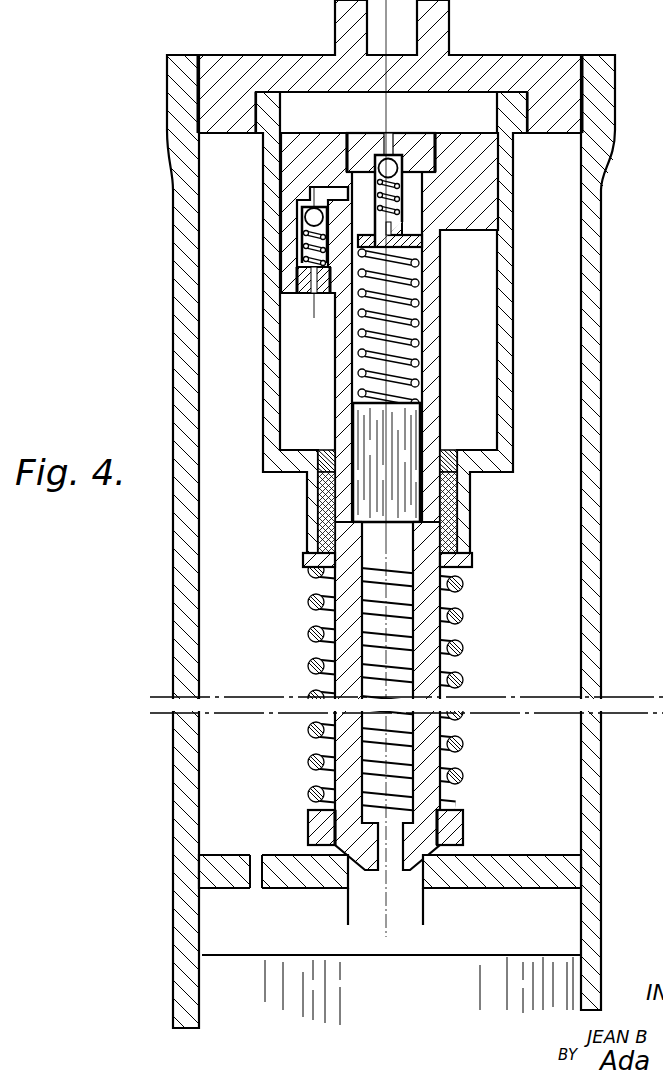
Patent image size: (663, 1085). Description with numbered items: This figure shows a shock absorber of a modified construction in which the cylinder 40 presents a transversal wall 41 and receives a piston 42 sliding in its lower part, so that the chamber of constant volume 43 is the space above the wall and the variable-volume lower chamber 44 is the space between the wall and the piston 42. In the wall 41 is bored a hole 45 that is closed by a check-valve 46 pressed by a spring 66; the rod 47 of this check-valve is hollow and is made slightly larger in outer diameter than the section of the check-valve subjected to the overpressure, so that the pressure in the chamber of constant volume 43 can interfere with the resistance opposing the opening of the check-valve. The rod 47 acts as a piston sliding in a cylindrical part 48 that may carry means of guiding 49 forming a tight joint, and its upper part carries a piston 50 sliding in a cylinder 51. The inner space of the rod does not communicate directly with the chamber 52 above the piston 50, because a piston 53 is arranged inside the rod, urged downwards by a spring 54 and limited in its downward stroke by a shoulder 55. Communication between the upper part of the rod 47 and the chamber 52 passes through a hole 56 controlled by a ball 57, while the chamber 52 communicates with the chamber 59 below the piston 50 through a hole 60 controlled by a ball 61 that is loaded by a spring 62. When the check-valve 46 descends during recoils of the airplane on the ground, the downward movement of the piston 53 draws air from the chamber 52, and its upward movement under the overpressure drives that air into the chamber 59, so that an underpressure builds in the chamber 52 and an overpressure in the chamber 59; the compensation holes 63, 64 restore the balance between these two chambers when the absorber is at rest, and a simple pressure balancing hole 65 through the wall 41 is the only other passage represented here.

The cylinder 40 is at (587, 463).
The transversal wall 41 is at (503, 870).
The piston 42 is at (555, 983).
The chamber of constant volume 43 is at (550, 421).
The lower chamber 44 is at (548, 913).
The hole 45 is at (377, 880).
The check-valve 46 is at (429, 834).
The rod 47 is at (347, 771).
The cylindrical part 48 is at (320, 500).
The means of guiding 49 is at (323, 515).
The piston 50 is at (478, 196).
The cylinder 51 is at (271, 313).
The chamber 52 is at (452, 110).
The piston 53 is at (402, 423).
The spring 54 is at (400, 337).
The shoulder 55 is at (364, 524).
The hole 56 is at (386, 157).
The ball 57 is at (393, 159).
The chamber 59 is at (294, 352).
The hole 60 is at (328, 193).
The ball 61 is at (303, 217).
The spring 62 is at (300, 250).
The compensation hole 63 is at (265, 130).
The compensation hole 64 is at (489, 472).
The pressure balancing hole 65 is at (251, 888).
The spring 66 is at (310, 602).